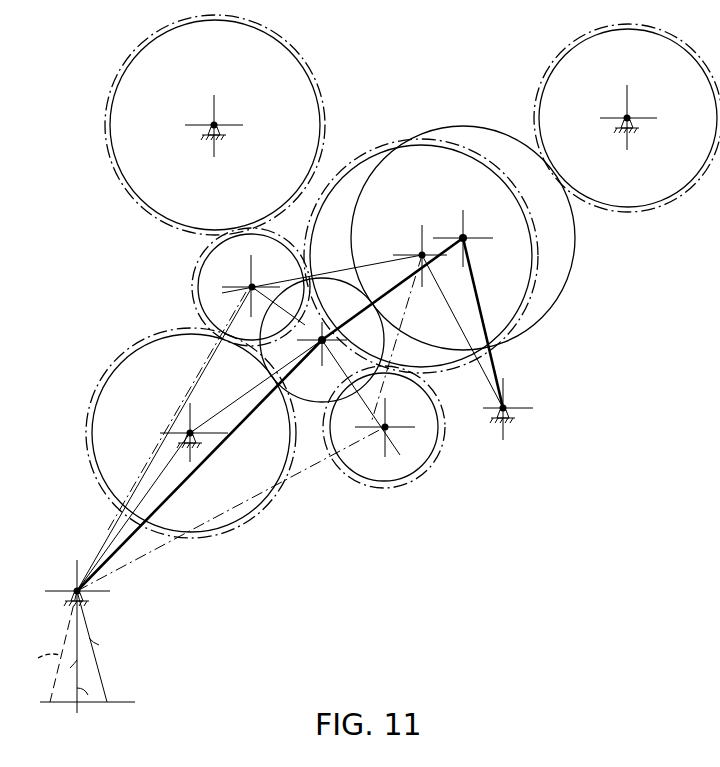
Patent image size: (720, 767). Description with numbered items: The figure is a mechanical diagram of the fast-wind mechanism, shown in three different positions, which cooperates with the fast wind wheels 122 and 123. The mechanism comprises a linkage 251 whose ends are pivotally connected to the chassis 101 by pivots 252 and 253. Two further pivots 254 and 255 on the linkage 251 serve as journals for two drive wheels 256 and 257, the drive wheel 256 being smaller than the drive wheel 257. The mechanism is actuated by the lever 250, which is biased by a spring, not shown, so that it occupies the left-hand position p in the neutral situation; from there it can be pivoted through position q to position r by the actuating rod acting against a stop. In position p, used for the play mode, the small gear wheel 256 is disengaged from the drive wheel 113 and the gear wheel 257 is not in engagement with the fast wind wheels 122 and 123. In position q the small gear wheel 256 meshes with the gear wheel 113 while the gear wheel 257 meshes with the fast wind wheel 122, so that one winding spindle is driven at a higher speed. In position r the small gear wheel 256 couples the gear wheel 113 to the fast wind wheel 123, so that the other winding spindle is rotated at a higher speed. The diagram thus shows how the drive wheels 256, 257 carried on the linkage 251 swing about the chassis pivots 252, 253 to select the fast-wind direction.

The chassis 101 is at (88, 603).
The drive wheel 113 is at (150, 333).
The fast wind wheel 122 is at (541, 79).
The fast wind wheel 123 is at (323, 110).
The lever 250 is at (88, 692).
The linkage 251 is at (255, 418).
The pivot 252 is at (76, 589).
The pivot 253 is at (506, 406).
The pivot 254 is at (327, 360).
The pivot 255 is at (466, 232).
The drive wheel 256 is at (196, 264).
The drive wheel 257 is at (566, 262).